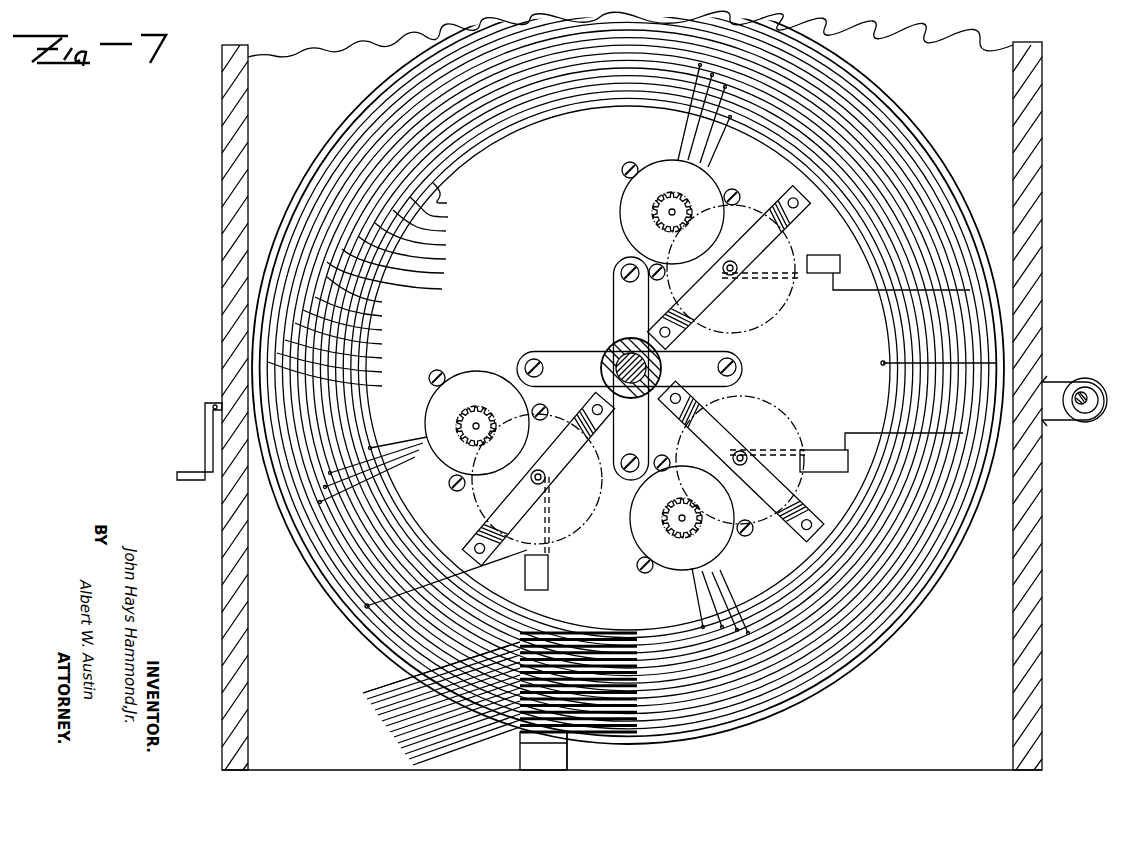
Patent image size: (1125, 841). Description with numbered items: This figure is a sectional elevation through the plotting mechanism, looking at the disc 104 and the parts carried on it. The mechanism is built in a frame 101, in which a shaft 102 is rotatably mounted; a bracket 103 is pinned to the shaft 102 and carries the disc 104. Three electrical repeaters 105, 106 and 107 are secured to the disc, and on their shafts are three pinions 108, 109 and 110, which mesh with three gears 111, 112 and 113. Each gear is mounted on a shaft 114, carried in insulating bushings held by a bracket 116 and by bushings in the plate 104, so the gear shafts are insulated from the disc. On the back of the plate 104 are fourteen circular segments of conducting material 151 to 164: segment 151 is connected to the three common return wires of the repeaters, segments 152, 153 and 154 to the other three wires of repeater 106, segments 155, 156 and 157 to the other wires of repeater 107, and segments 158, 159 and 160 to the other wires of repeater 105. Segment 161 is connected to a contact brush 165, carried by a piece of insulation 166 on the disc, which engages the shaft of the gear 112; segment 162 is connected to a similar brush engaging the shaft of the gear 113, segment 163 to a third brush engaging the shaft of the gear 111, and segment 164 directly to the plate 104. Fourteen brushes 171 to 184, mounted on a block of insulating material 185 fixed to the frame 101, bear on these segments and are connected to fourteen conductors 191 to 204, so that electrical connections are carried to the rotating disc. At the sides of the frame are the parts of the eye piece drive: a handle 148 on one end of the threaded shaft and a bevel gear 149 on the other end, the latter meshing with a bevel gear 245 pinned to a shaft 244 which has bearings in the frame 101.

The frame 101 is at (222, 172).
The shaft 102 is at (620, 360).
The bracket 103 is at (620, 314).
The disc 104 is at (960, 533).
The electrical repeater 105 is at (466, 374).
The electrical repeater 106 is at (680, 568).
The electrical repeater 107 is at (619, 206).
The pinion 108 is at (462, 409).
The pinion 109 is at (664, 530).
The pinion 110 is at (660, 194).
The gear 111 is at (482, 503).
The gear 112 is at (780, 401).
The gear 113 is at (778, 316).
The shaft 114 is at (736, 270).
The bracket 116 is at (752, 223).
The handle 148 is at (205, 442).
The bevel gear 149 is at (1058, 380).
The circular segment of conducting material 151 is at (455, 198).
The circular segment of conducting material 152 is at (444, 212).
The circular segment of conducting material 153 is at (435, 225).
The circular segment of conducting material 154 is at (426, 239).
The circular segment of conducting material 155 is at (418, 252).
The circular segment of conducting material 156 is at (409, 266).
The circular segment of conducting material 157 is at (400, 280).
The circular segment of conducting material 158 is at (370, 294).
The circular segment of conducting material 159 is at (364, 311).
The circular segment of conducting material 160 is at (358, 325).
The circular segment of conducting material 161 is at (354, 338).
The contact segment 162 is at (349, 354).
The contact segment 163 is at (345, 367).
The contact segment 164 is at (341, 379).
The contact brush 165 is at (796, 282).
The piece of insulation 166 is at (820, 257).
The brush 171 is at (625, 633).
The brush 184 is at (605, 727).
The block of insulating material 185 is at (538, 740).
The conductor 191 is at (392, 680).
The conductor 204 is at (494, 740).
The shaft 244 is at (1087, 405).
The bevel gear 245 is at (1095, 383).